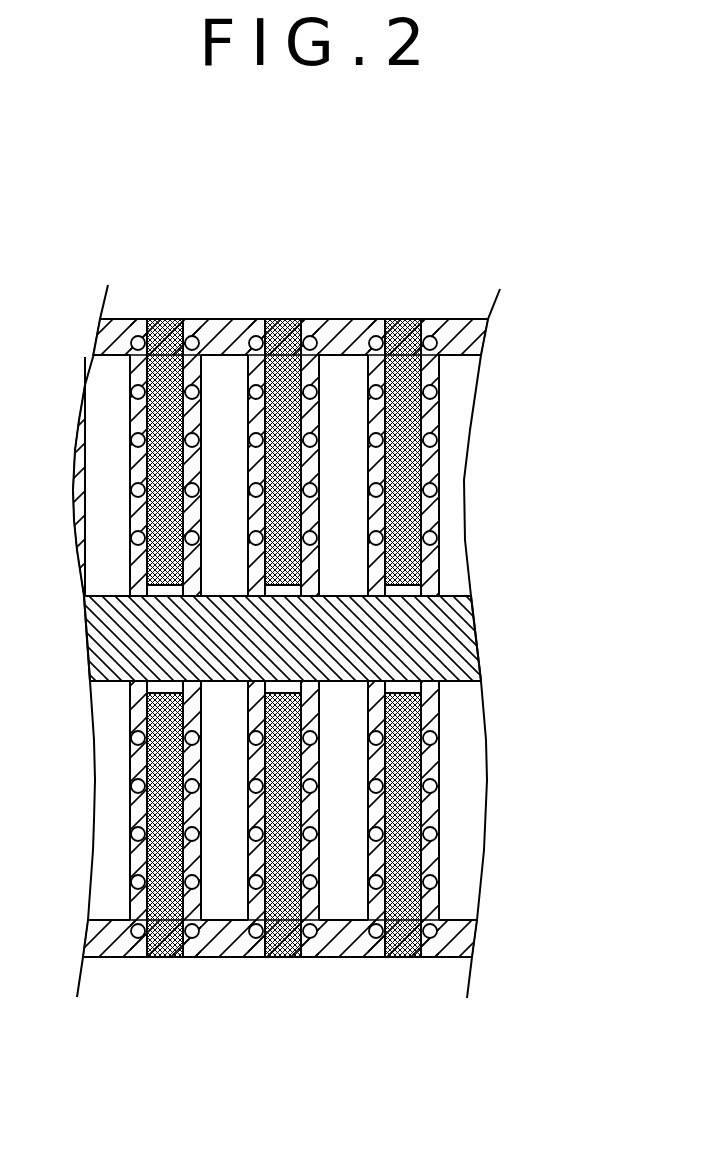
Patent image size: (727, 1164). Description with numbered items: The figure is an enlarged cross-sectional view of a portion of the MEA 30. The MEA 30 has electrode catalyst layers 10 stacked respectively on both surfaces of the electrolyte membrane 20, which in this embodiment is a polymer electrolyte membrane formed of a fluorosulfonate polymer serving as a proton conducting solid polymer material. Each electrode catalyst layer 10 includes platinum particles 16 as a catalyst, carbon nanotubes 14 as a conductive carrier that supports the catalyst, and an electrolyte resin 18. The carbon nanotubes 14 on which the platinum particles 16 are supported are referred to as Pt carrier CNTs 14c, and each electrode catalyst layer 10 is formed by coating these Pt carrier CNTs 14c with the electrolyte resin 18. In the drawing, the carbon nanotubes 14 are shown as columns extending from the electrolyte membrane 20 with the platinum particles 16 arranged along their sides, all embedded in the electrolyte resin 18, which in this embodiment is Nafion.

The electrode catalyst layer 10 is at (352, 182).
The carbon nanotube 14 is at (282, 330).
The Pt carrier CNT 14c is at (265, 228).
The platinum particle 16 is at (322, 330).
The electrolyte resin 18 is at (230, 330).
The electrolyte membrane 20 is at (459, 628).
The MEA 30 is at (516, 238).